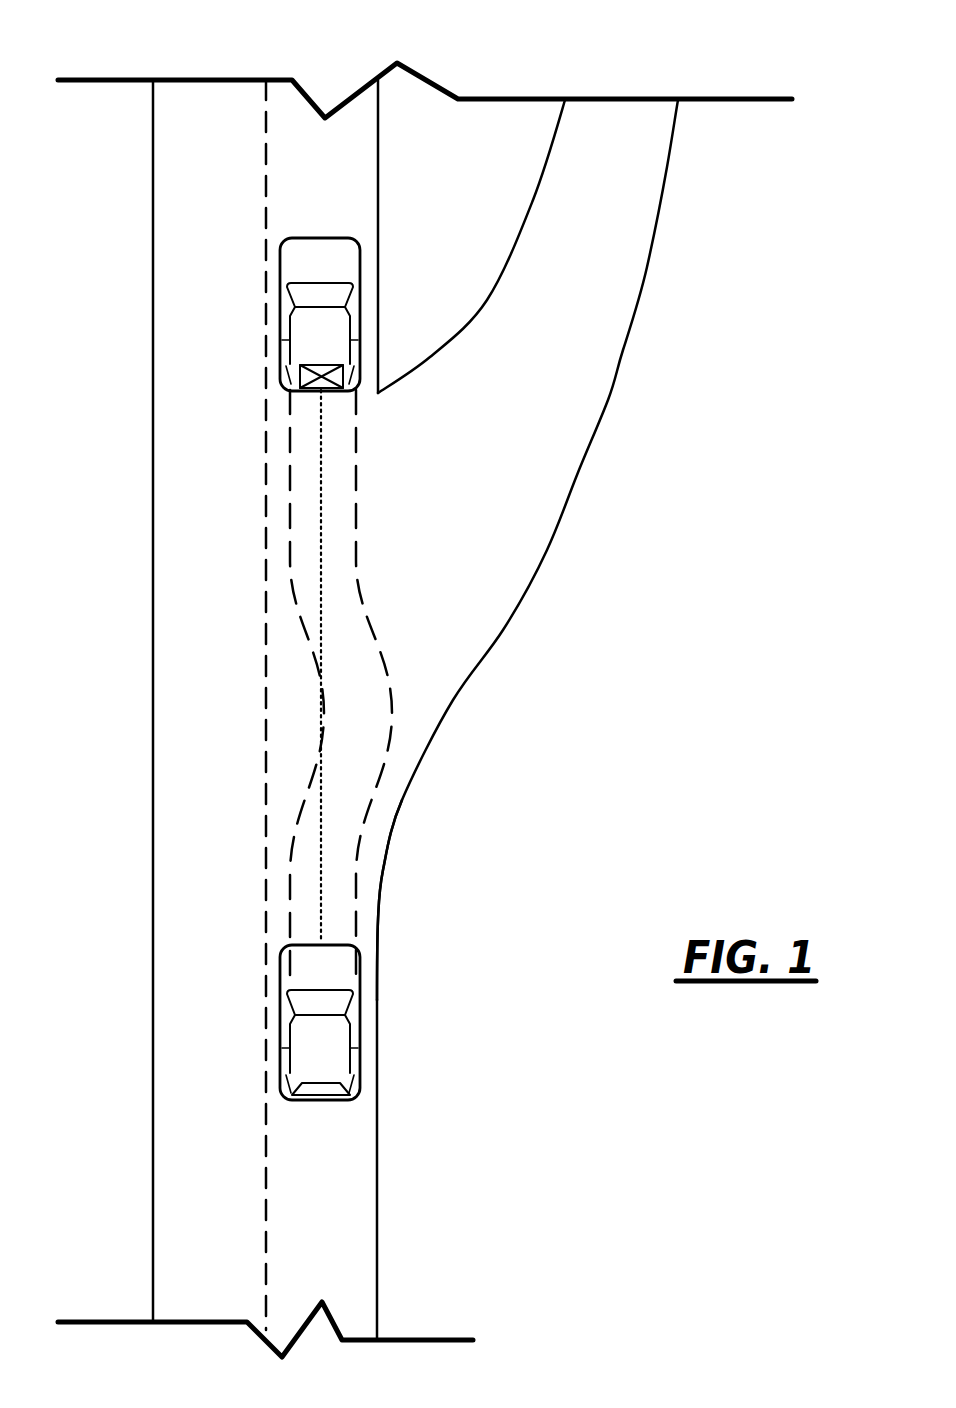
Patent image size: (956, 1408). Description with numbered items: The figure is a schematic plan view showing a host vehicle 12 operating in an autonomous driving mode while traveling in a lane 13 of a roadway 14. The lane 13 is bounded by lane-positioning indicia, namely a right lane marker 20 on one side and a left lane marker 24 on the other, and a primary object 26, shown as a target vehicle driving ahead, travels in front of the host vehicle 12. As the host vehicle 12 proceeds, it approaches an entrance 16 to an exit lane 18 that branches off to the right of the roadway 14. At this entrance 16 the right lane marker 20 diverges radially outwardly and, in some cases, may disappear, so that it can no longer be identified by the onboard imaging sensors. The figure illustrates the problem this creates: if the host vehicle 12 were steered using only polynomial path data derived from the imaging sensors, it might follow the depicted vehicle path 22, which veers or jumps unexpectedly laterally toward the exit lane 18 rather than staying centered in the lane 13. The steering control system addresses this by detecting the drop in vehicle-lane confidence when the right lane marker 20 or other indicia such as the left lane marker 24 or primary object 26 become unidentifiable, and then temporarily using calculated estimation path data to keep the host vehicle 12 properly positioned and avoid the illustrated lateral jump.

The host vehicle 12 is at (268, 958).
The lane 13 is at (266, 197).
The roadway 14 is at (393, 53).
The entrance 16 is at (456, 730).
The exit lane 18 is at (557, 82).
The right lane marker 20 is at (380, 929).
The vehicle path 22 is at (372, 544).
The left lane marker 24 is at (263, 1035).
The primary object 26 is at (268, 272).